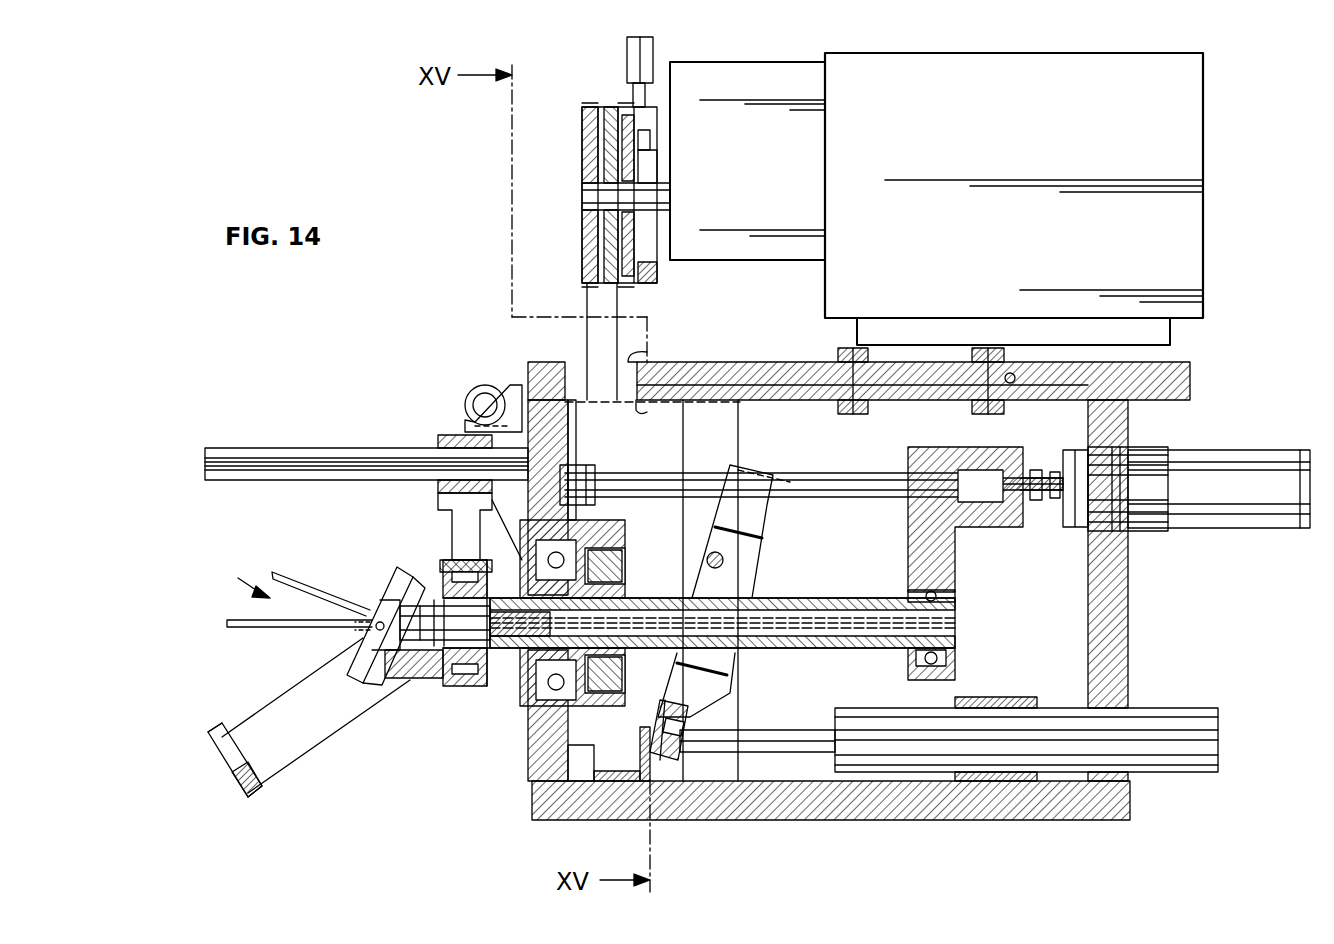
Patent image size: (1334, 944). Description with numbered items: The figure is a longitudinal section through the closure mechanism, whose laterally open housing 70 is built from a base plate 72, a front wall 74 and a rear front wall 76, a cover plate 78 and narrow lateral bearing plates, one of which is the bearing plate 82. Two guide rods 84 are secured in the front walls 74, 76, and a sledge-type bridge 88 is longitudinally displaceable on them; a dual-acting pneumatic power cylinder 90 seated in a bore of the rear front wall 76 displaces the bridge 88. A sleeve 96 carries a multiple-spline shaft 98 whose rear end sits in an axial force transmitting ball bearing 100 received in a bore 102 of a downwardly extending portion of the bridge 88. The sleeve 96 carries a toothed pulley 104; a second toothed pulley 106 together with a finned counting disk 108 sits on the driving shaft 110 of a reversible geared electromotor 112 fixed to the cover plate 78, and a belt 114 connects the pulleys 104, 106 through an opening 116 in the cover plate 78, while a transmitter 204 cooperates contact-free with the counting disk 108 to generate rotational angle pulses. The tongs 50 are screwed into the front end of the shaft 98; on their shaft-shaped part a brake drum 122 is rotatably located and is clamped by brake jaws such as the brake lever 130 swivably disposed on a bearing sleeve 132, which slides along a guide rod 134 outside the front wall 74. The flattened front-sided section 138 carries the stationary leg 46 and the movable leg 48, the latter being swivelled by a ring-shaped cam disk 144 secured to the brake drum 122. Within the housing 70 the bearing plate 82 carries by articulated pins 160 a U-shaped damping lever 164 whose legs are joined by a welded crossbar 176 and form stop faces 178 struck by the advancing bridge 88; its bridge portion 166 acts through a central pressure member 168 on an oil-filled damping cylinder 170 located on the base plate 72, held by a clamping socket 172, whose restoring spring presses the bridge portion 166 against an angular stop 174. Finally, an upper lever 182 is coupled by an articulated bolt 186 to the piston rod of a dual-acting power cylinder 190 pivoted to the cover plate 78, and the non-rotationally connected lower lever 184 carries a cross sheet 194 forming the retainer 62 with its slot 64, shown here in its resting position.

The transmitter 204 is at (627, 60).
The reversible geared electromotor 112 is at (1204, 104).
The driving shaft 110 is at (584, 193).
The second toothed pulley 106 is at (582, 236).
The counting disk 108 is at (655, 268).
The belt 114 is at (587, 342).
The opening 116 is at (636, 350).
The cover plate 78 is at (796, 380).
The housing 70 is at (1192, 366).
The articulated bolt 186 is at (484, 388).
The upper lever 182 is at (470, 430).
The guide rod 134 is at (265, 449).
The bearing sleeve 132 is at (440, 488).
The brake lever 130 is at (456, 540).
The bearing plate 82 is at (732, 443).
The guide rods 84 is at (640, 486).
The dual-acting power cylinder 190 is at (894, 400).
The sledge-type bridge 88 is at (1005, 446).
The dual-acting pneumatic power cylinder 90 is at (1240, 458).
The crossbar 176 is at (708, 560).
The stop faces 178 is at (768, 506).
The toothed pulley 104 is at (612, 562).
The damping lever 164 is at (770, 575).
The bore 102 is at (912, 592).
The rear front wall 76 is at (1128, 606).
The tongs 50 is at (236, 572).
The movable leg 48 is at (300, 578).
The front-sided section 138 is at (395, 605).
The stationary leg 46 is at (270, 628).
The retainer 62 is at (210, 742).
The slot 64 is at (220, 766).
The cross sheet 194 is at (240, 800).
The cam disk 144 is at (418, 682).
The brake drum 122 is at (470, 688).
The lower lever 184 is at (370, 732).
The sleeve 96 is at (615, 680).
The articulated pins 160 is at (736, 668).
The multiple-spline shaft 98 is at (856, 650).
The axial force transmitting ball bearing 100 is at (940, 675).
The cylinder clamp 172 is at (1003, 698).
The bridge portion 166 is at (700, 712).
The angular stop 174 is at (634, 756).
The damping cylinder 170 is at (1220, 736).
The front wall 74 is at (533, 764).
The pressure member 168 is at (672, 790).
The base plate 72 is at (1066, 812).